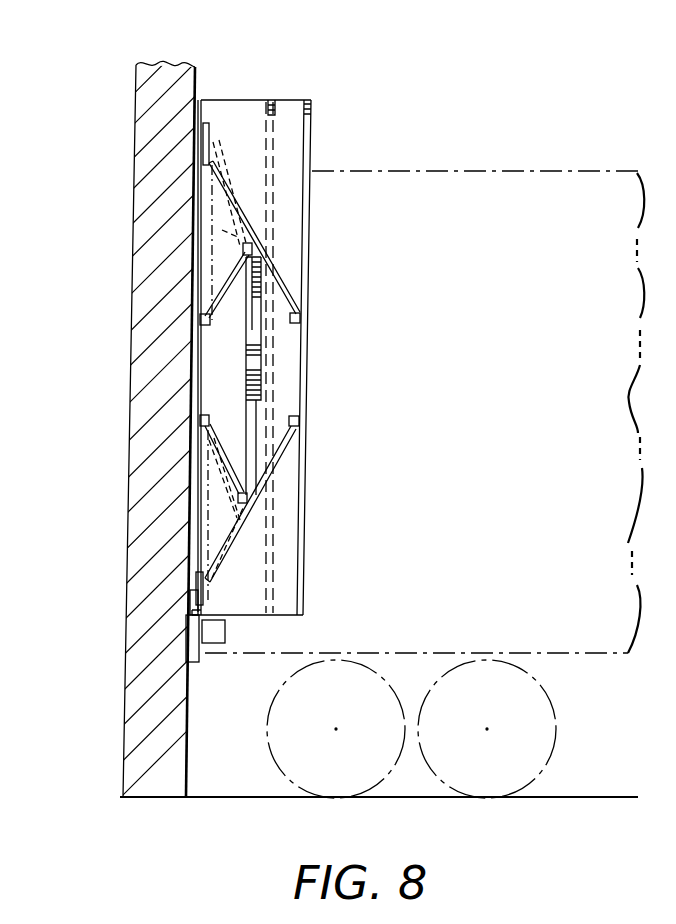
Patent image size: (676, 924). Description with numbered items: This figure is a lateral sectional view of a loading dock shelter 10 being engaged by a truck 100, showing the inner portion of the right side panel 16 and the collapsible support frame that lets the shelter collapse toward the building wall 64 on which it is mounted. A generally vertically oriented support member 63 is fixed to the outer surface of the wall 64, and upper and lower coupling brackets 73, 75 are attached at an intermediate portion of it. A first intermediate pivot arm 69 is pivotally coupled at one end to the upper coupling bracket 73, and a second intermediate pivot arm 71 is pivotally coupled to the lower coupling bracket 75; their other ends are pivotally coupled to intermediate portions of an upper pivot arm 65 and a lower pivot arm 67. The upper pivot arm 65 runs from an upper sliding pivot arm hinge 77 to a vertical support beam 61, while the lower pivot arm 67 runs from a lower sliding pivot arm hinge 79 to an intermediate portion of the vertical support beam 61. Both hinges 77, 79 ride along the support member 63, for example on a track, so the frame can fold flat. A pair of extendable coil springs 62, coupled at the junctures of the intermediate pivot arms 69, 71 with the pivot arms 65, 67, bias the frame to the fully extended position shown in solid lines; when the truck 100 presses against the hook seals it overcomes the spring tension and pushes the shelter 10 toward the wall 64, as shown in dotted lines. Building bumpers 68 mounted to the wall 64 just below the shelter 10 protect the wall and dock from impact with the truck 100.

The loading dock shelter 10 is at (225, 72).
The right side panel 16 is at (293, 99).
The vertical support beam 61 is at (312, 255).
The extendable coil springs 62 is at (245, 362).
The support member 63 is at (197, 237).
The building wall 64 is at (150, 92).
The upper pivot arm 65 is at (244, 203).
The lower pivot arm 67 is at (229, 546).
The building bumpers 68 is at (227, 631).
The first intermediate pivot arm 69 is at (243, 293).
The second intermediate pivot arm 71 is at (223, 444).
The upper coupling bracket 73 is at (200, 320).
The lower coupling bracket 75 is at (200, 430).
The upper sliding pivot arm hinge 77 is at (203, 143).
The lower sliding pivot arm hinge 79 is at (196, 598).
The truck 100 is at (538, 170).